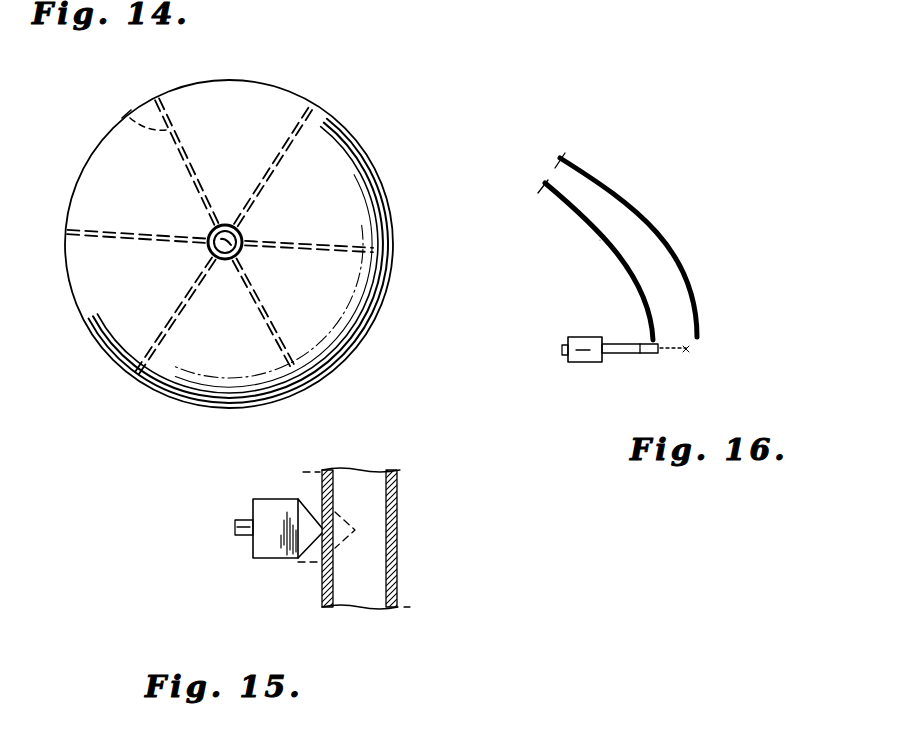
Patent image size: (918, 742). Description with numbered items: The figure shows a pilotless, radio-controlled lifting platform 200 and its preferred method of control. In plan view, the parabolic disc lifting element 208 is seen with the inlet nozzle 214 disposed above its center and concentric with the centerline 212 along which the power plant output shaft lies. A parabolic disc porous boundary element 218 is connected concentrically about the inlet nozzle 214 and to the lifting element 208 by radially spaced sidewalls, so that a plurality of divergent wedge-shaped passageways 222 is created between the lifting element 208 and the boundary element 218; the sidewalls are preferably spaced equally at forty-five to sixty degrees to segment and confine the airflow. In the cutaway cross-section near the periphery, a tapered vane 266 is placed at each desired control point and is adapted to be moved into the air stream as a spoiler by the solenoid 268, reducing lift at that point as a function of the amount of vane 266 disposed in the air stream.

In FIG. 14, the lifting platform 200 is at (345, 110).
In FIG. 15, the parabolic disc lifting element 208 is at (322, 604).
In FIG. 16, the parabolic disc lifting element 208 is at (648, 302).
In FIG. 14, the centerline 212 is at (240, 256).
In FIG. 14, the inlet nozzle 214 is at (211, 257).
In FIG. 14, the parabolic disc porous boundary element 218 is at (377, 176).
In FIG. 15, the parabolic disc porous boundary element 218 is at (397, 546).
In FIG. 16, the parabolic disc porous boundary element 218 is at (662, 236).
In FIG. 14, the divergent wedge-shaped passageways 222 is at (127, 115).
In FIG. 15, the divergent wedge-shaped passageways 222 is at (357, 600).
In FIG. 16, the divergent wedge-shaped passageways 222 is at (668, 280).
In FIG. 15, the tapered vane 266 is at (253, 500).
In FIG. 16, the tapered vane 266 is at (627, 353).
In FIG. 16, the solenoid 268 is at (577, 337).